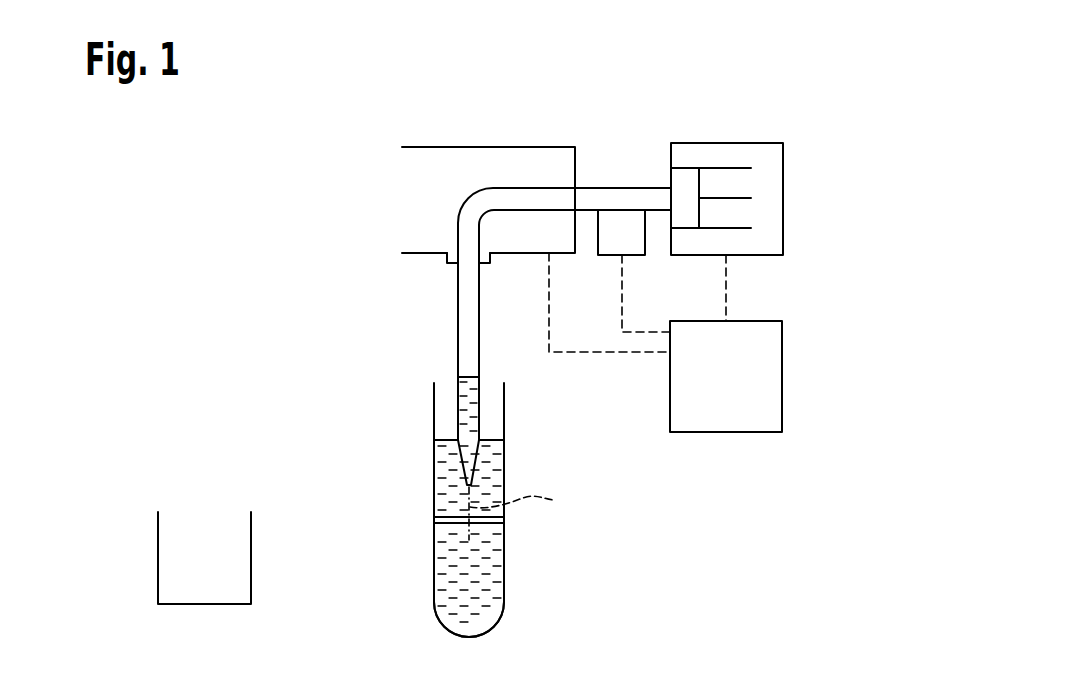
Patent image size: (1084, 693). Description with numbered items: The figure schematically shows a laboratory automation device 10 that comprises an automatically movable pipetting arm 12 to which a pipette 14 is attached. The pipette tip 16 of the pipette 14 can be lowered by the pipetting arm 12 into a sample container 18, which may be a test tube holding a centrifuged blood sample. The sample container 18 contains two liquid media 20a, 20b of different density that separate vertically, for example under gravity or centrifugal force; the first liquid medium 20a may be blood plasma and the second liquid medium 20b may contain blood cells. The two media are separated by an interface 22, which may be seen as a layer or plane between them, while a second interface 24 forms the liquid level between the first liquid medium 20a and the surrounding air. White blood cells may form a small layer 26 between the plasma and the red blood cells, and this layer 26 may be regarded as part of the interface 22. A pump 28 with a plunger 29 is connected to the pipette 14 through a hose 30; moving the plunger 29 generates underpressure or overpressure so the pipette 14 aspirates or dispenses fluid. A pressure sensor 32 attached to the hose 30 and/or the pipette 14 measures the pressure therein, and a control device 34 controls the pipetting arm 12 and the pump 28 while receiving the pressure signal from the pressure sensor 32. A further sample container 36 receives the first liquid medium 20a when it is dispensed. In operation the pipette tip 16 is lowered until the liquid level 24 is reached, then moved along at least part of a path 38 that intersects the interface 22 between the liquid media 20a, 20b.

The laboratory automation device 10 is at (858, 96).
The pipetting arm 12 is at (402, 170).
The pipette 14 is at (458, 295).
The pipette tip 16 is at (465, 486).
The sample container 18 is at (434, 566).
The first liquid medium 20a is at (495, 470).
The second liquid medium 20b is at (495, 570).
The interface 22 is at (512, 522).
The second interface / liquid level 24 is at (490, 442).
The layer 26 is at (434, 520).
The pump 28 is at (783, 215).
The plunger 29 is at (730, 197).
The hose 30 is at (625, 188).
The pressure sensor 32 is at (609, 255).
The control device 34 is at (782, 375).
The further sample container 36 is at (158, 560).
The path 38 is at (527, 499).